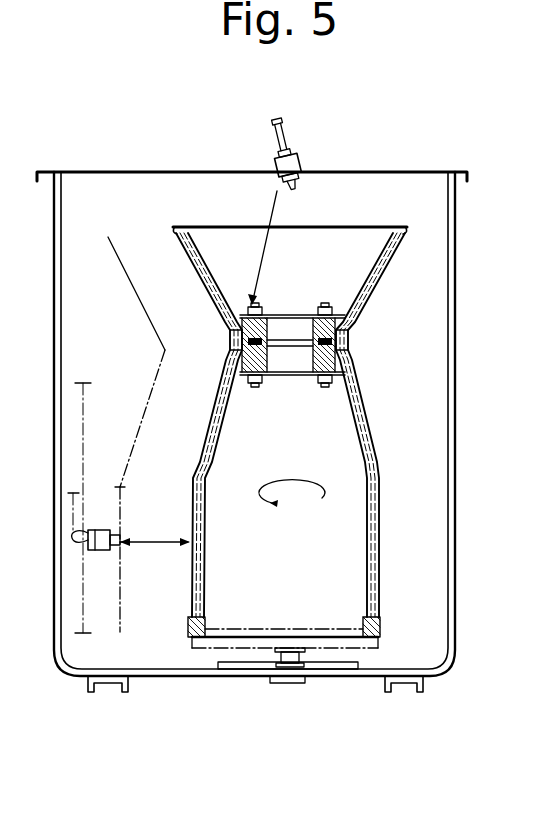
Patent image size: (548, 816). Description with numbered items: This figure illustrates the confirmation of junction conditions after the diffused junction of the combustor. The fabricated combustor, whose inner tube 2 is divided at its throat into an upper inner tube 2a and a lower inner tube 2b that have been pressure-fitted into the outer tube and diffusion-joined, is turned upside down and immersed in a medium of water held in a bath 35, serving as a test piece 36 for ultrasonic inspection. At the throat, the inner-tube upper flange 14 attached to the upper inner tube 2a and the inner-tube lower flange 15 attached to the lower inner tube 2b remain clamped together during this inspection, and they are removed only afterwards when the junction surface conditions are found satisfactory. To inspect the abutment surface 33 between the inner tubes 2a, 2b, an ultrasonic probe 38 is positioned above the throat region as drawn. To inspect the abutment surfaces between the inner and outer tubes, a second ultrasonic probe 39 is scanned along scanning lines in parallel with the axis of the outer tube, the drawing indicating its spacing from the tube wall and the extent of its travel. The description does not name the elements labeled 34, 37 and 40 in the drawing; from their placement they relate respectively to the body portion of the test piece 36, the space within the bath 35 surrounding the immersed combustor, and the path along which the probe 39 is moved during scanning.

The inner tube 2 is at (356, 553).
The upper inner tube 2a is at (367, 486).
The lower inner tube 2b is at (370, 278).
The inner-tube upper flange 14 is at (248, 363).
The inner-tube lower flange 15 is at (333, 311).
The abutment surface 33 is at (237, 337).
The bowl body portion 34 is at (202, 430).
The bath 35 is at (453, 222).
The test piece 36 is at (350, 292).
The space 37 is at (427, 447).
The ultrasonic probe 38 is at (300, 158).
The ultrasonic probe 39 is at (102, 545).
The swing path line 40 is at (120, 258).